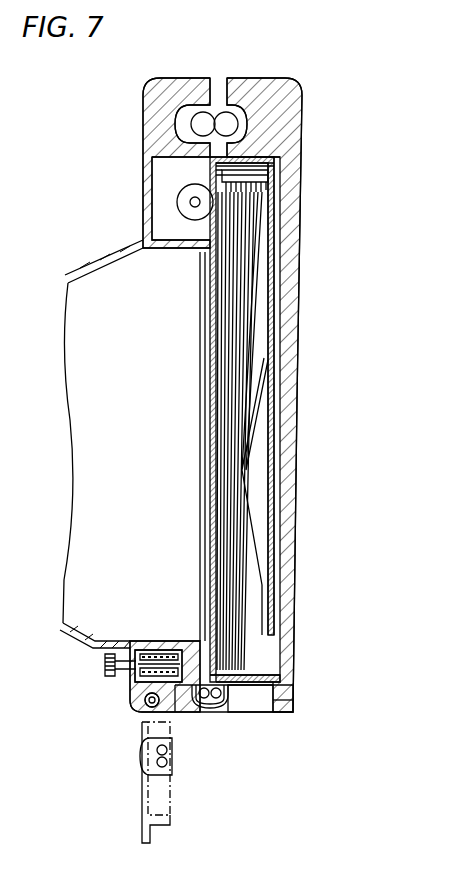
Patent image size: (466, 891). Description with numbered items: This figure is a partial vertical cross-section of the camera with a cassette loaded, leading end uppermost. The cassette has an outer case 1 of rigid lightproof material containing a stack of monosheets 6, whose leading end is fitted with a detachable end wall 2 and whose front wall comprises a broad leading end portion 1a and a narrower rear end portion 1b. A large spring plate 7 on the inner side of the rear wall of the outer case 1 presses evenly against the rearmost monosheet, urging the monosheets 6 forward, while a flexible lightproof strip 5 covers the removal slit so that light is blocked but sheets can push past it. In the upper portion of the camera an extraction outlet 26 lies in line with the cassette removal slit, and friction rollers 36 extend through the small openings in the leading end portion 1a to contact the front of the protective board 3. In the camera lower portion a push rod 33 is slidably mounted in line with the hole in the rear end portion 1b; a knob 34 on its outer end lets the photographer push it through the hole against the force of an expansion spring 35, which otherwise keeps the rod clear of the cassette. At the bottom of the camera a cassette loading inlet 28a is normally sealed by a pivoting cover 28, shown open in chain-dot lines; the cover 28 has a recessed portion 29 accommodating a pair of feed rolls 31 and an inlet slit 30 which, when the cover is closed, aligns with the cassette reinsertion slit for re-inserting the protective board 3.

The outer case 1 is at (272, 185).
The leading end portion 1a is at (288, 112).
The rear end portion 1b is at (140, 683).
The end wall 2 is at (272, 156).
The protective board 3 is at (205, 557).
The strip 5 is at (218, 172).
The monosheets 6 is at (228, 292).
The spring plate 7 is at (256, 270).
The extraction outlet 26 is at (236, 95).
The cover 28 is at (246, 696).
The cassette loading inlet 28a is at (263, 706).
The recessed portion 29 is at (203, 124).
The inlet slit 30 is at (202, 702).
The feed rolls 31 is at (182, 712).
The push rod 33 is at (178, 652).
The knob 34 is at (104, 666).
The expansion spring 35 is at (145, 660).
The friction rollers 36 is at (185, 210).